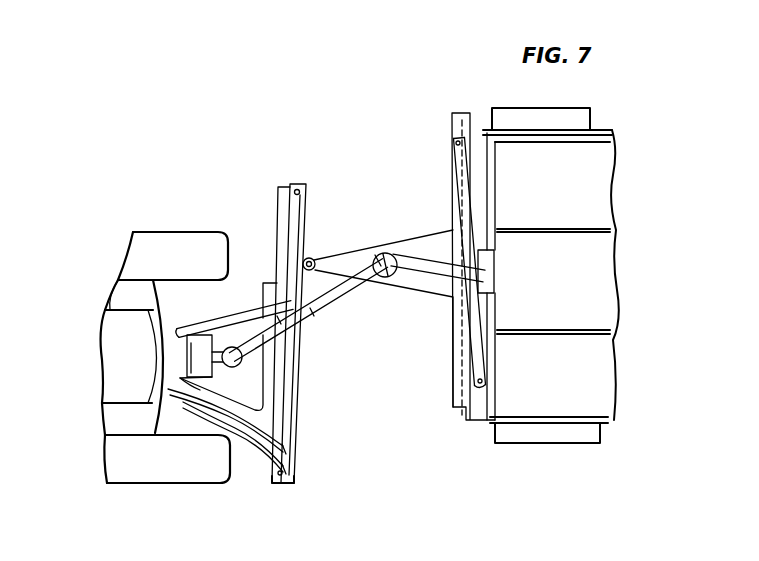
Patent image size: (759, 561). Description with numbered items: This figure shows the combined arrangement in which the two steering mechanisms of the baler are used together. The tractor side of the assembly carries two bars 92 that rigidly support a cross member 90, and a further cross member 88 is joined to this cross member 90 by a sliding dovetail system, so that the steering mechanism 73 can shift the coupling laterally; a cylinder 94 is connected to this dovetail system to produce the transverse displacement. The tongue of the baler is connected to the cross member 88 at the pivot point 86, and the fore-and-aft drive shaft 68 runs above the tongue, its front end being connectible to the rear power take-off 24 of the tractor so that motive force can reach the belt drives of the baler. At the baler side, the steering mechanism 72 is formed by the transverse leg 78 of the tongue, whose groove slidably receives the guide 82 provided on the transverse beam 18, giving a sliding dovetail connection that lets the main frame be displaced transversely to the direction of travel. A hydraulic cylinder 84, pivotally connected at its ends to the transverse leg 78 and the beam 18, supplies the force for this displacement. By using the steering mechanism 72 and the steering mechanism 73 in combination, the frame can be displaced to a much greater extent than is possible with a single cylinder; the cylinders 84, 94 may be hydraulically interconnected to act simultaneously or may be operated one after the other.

The transverse beam 18 is at (480, 400).
The power take-off 24 is at (232, 346).
The drive shaft 68 is at (425, 270).
The steering mechanism 72 is at (443, 422).
The steering mechanism 73 is at (294, 166).
The transverse leg 78 is at (453, 118).
The guide 82 is at (466, 418).
The hydraulic cylinder 84 is at (478, 312).
The pivot connection 86 is at (315, 261).
The cross member 88 is at (305, 205).
The cross member 90 is at (272, 285).
The bars 92 is at (196, 322).
The cylinder 94 is at (290, 430).